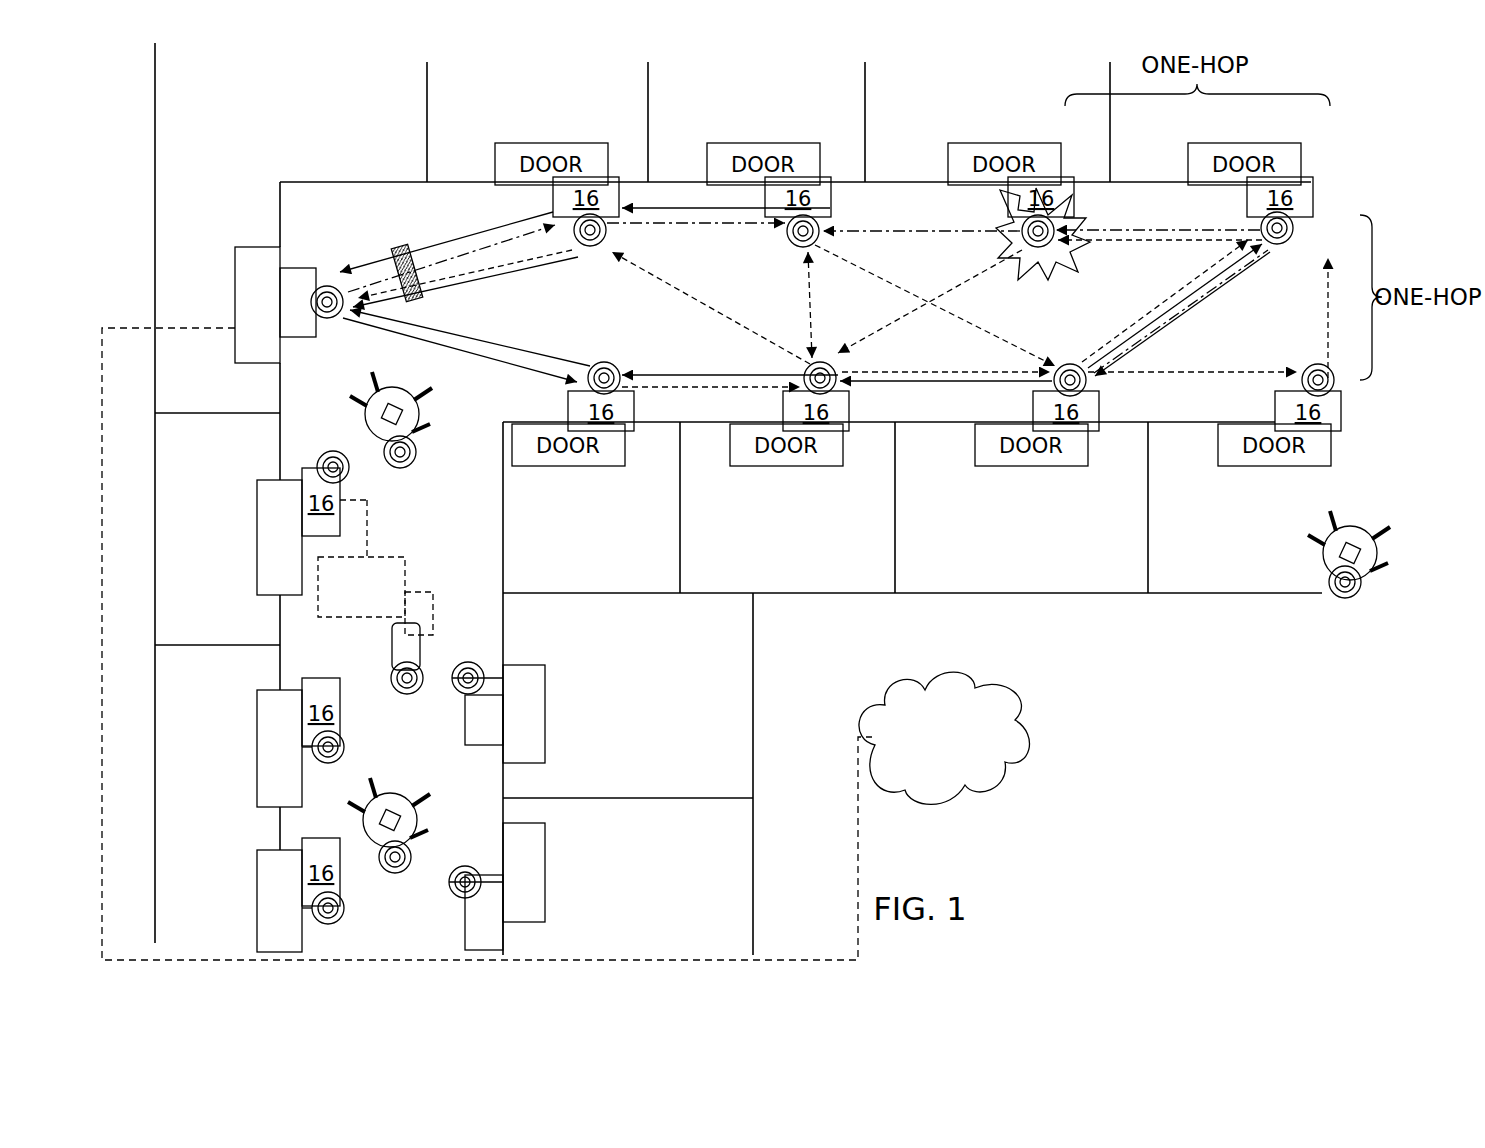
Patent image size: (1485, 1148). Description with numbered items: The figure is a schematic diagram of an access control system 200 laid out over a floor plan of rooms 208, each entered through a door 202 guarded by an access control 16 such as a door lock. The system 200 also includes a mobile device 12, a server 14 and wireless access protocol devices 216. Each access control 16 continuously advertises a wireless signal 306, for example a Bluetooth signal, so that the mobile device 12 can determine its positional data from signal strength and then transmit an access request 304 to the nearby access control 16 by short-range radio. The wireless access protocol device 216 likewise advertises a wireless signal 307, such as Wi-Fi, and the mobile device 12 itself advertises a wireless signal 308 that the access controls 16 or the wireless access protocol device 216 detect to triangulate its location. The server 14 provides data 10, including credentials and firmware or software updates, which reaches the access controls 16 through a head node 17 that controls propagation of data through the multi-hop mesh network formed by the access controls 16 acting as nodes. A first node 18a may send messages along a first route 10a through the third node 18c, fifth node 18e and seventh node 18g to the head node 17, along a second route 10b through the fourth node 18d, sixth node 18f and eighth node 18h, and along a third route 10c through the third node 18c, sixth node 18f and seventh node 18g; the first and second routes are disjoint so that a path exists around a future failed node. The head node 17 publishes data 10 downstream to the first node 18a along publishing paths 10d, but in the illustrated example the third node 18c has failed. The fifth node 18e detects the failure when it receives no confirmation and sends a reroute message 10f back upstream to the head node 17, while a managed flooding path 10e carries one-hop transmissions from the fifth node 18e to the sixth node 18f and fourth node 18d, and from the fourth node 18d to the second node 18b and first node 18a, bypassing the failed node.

The access control system 200 is at (195, 110).
The head node 17 is at (293, 253).
The data 10 is at (395, 241).
The first route 10a is at (1150, 229).
The second route 10b is at (1118, 328).
The third route 10c is at (1150, 241).
The publishing path 10d is at (900, 230).
The managed flooding path 10e is at (880, 270).
The reroute message 10f is at (460, 235).
The mobile device 12 is at (406, 646).
The server 14 is at (944, 738).
The access control 16 is at (810, 563).
The first node 18a is at (1285, 250).
The second node 18b is at (1290, 356).
The third node 18c is at (1026, 272).
The fourth node 18d is at (1028, 350).
The fifth node 18e is at (787, 262).
The sixth node 18f is at (805, 350).
The seventh node 18g is at (573, 272).
The eighth node 18h is at (563, 350).
The door 202 is at (754, 533).
The room 208 is at (792, 478).
The wireless access protocol device 216 is at (400, 795).
The access request 304 is at (408, 592).
The wireless signal 306 is at (837, 560).
The wireless signal 307 is at (416, 455).
The wireless signal 308 is at (415, 692).